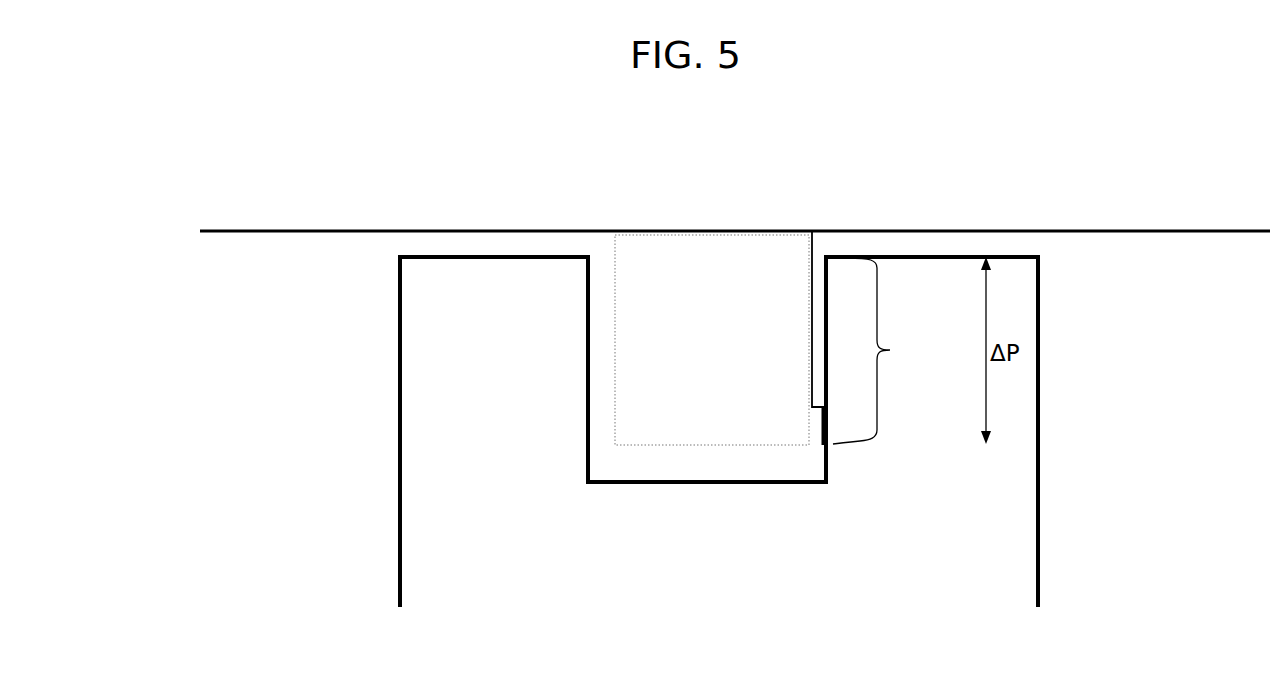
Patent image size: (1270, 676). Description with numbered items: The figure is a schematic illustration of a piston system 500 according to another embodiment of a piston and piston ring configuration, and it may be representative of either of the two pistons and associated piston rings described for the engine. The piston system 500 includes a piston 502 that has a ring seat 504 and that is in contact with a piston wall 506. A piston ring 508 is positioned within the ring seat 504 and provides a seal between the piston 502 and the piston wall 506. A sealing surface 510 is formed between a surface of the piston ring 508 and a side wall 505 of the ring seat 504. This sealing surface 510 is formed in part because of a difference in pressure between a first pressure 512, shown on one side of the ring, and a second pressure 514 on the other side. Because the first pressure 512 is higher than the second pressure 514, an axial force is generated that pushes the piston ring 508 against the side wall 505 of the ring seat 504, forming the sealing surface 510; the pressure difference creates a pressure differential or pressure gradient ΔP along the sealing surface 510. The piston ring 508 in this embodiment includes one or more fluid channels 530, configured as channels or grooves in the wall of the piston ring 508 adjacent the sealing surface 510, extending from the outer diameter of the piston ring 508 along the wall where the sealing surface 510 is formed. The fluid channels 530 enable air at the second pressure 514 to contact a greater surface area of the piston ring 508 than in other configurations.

The piston system 500 is at (318, 415).
The piston 502 is at (1023, 572).
The ring seat 504 is at (685, 466).
The side wall 505 is at (824, 461).
The piston wall 506 is at (1118, 231).
The piston ring 508 is at (712, 257).
The sealing surface 510 is at (890, 350).
The first pressure 512 is at (443, 432).
The second pressure 514 is at (973, 272).
The fluid channels 530 is at (824, 243).